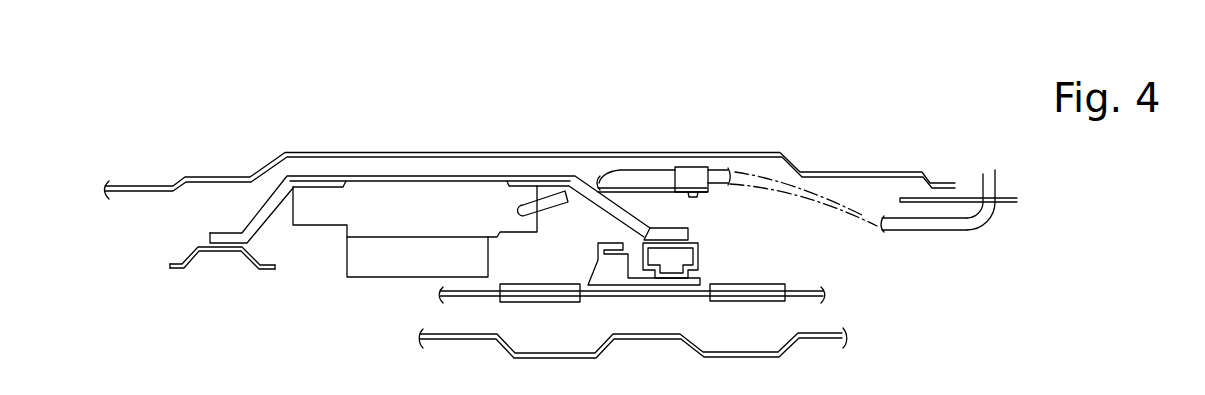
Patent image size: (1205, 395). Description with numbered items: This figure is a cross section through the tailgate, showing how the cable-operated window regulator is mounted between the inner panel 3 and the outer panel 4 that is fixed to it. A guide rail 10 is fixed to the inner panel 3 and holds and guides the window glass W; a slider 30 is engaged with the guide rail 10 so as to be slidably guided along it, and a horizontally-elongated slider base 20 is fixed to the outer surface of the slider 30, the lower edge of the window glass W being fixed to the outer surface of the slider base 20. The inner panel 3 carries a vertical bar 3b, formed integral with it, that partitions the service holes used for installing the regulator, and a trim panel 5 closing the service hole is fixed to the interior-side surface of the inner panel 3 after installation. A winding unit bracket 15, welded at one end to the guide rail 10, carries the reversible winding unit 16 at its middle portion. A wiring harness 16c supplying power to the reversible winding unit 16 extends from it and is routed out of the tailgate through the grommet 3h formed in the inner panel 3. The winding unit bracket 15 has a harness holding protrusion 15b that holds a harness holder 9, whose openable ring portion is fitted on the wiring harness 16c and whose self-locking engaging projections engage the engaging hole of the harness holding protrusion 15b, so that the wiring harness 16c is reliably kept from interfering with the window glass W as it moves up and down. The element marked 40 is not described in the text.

The inner panel 3 is at (947, 204).
The vertical bar 3b is at (250, 264).
The grommet 3h is at (985, 185).
The outer panel 4 is at (788, 355).
The trim panel 5 is at (537, 152).
The harness holder 9 is at (690, 172).
The guide rail 10 is at (702, 255).
The winding unit bracket 15 is at (443, 176).
The harness holding protrusion 15b is at (660, 196).
The reversible winding unit 16 is at (390, 262).
The wiring harness 16c is at (642, 175).
The slider base 20 is at (592, 262).
The slider 30 is at (668, 268).
The element 40 is at (617, 258).
The window glass W is at (797, 283).